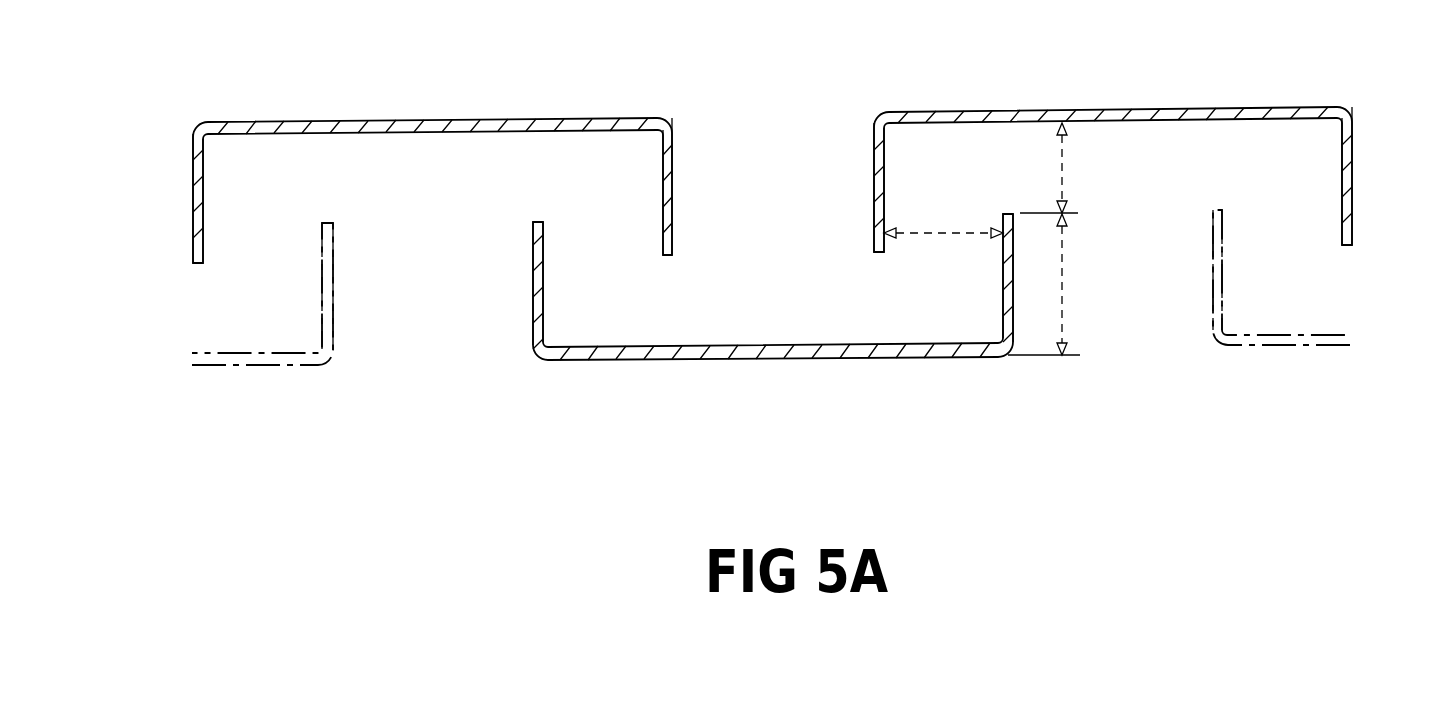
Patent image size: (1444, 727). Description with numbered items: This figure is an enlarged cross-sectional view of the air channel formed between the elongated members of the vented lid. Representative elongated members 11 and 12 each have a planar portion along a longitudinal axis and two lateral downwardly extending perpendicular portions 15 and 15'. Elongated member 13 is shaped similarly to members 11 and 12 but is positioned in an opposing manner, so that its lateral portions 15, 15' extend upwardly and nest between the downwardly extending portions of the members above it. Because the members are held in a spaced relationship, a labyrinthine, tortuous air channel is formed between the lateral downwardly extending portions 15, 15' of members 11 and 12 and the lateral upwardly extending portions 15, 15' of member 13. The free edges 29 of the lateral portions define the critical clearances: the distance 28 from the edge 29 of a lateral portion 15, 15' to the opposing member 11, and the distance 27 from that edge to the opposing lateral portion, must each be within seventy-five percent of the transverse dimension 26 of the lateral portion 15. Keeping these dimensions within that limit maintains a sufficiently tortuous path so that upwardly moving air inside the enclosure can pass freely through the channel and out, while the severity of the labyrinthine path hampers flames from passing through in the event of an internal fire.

The elongated member 11 is at (1118, 107).
The elongated member 12 is at (414, 118).
The elongated member 13 is at (787, 364).
The lateral portion 15 is at (840, 228).
The lateral portion 15' is at (710, 234).
The transverse dimension 26 is at (1066, 296).
The distance 27 is at (940, 231).
The distance 28 is at (1066, 172).
The edge 29 is at (1001, 212).